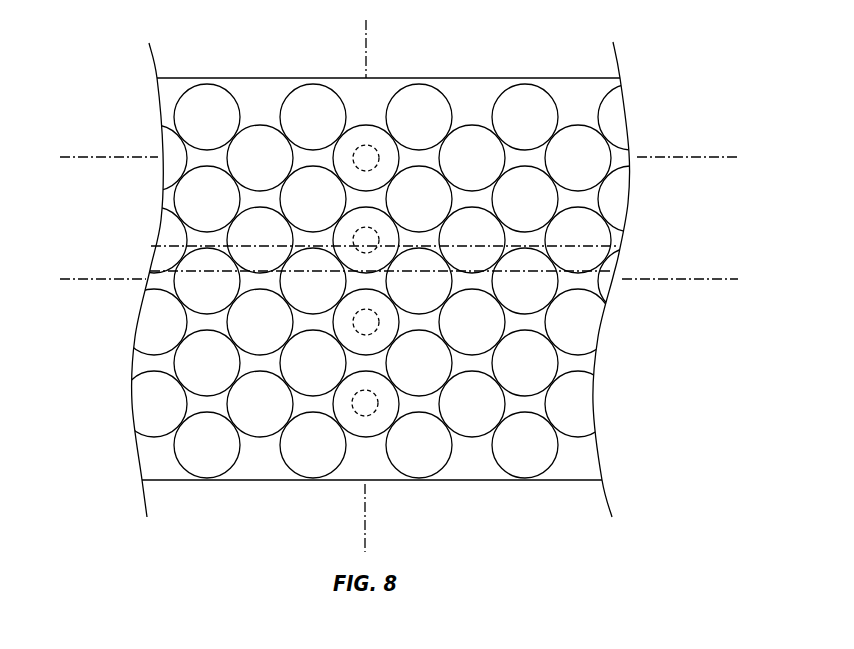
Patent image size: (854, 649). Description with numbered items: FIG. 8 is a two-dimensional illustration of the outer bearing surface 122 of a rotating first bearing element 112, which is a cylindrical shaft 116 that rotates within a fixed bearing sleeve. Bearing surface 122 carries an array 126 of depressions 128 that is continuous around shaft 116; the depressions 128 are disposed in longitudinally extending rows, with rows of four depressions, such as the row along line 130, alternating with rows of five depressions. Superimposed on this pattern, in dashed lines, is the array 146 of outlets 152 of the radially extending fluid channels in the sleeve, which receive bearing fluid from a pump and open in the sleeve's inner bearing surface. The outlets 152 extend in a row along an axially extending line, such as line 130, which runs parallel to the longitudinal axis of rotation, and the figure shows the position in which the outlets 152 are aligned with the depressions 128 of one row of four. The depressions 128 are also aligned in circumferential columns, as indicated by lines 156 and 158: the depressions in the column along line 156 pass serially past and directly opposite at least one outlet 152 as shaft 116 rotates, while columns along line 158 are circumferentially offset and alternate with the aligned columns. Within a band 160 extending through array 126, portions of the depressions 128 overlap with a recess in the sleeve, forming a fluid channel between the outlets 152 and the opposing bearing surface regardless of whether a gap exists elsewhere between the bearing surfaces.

The first bearing element 112 is at (563, 75).
The cylindrical shaft 116 is at (378, 78).
The outer bearing surface 122 is at (470, 90).
The array of depressions 126 is at (253, 94).
The depressions 128 is at (298, 88).
The line 130 is at (368, 45).
The array of radially extending fluid channels 146 is at (358, 447).
The outlet 152 is at (362, 390).
The line 156 is at (693, 157).
The line 158 is at (693, 279).
The band 160 is at (142, 246).